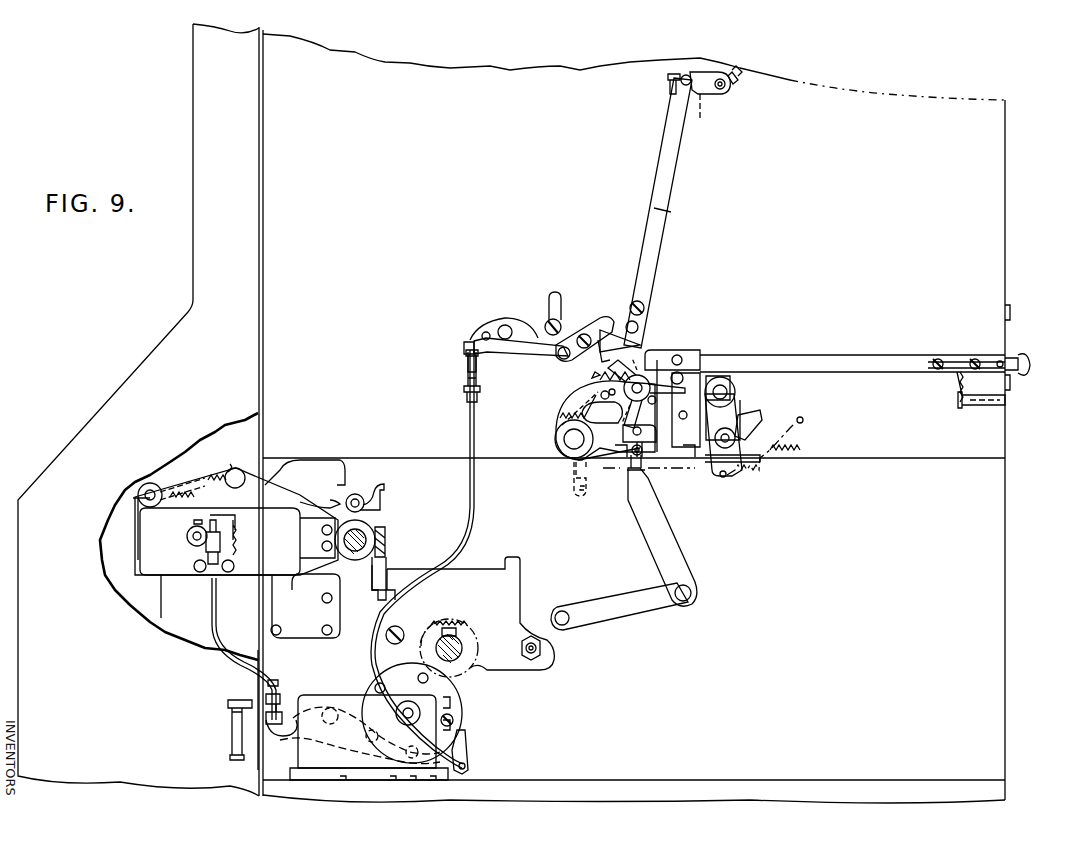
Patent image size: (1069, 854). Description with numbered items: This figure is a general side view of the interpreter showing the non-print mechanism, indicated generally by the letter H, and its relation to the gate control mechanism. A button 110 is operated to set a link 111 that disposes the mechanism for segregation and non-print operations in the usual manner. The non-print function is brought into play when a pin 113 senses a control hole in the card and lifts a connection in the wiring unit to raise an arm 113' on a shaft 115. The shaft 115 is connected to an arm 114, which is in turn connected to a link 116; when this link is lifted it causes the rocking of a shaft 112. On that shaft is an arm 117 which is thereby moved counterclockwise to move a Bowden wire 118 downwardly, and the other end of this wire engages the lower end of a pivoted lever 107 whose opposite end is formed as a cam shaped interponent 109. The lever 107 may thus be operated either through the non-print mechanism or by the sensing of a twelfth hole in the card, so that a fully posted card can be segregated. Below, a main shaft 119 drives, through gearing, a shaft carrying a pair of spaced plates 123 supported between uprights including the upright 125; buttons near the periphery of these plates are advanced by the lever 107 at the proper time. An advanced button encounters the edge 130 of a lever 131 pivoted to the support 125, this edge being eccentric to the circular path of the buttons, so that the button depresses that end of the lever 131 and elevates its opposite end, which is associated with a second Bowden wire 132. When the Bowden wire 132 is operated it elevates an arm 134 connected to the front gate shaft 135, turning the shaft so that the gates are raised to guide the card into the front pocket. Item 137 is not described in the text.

The pivoted lever 107 is at (466, 736).
The cam shaped interponent 109 is at (460, 706).
The button 110 is at (1016, 360).
The link 111 is at (818, 360).
The shaft 112 is at (560, 362).
The pin 113 is at (654, 95).
The arm 113' is at (706, 113).
The arm 114 is at (708, 92).
The shaft 115 is at (726, 88).
The link 116 is at (668, 189).
The arm 117 is at (535, 368).
The Bowden wire 118 is at (472, 432).
The main shaft 119 is at (462, 658).
The spaced plates 123 is at (460, 718).
The upright 125 is at (328, 695).
The edge 130 is at (392, 762).
The lever 131 is at (314, 733).
The Bowden wire 132 is at (212, 620).
The arm 134 is at (223, 531).
The front gate shaft 135 is at (200, 535).
The disk 137 is at (374, 688).
The non-print mechanism H is at (664, 338).